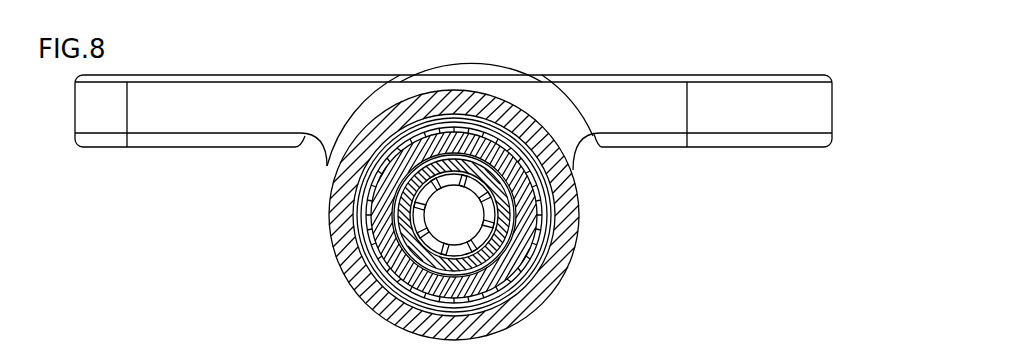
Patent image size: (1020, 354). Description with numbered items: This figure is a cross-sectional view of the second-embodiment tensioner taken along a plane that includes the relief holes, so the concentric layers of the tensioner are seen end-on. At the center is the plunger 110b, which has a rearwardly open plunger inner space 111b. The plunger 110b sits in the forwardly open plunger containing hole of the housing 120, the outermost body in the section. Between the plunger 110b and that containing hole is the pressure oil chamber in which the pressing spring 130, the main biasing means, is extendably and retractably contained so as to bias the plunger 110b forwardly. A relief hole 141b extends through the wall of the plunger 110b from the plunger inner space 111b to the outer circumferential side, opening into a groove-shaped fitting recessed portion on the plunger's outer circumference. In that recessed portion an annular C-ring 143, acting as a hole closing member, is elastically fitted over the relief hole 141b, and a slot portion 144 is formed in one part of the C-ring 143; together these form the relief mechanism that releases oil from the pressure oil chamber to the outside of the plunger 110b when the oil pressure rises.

The plunger 110b is at (378, 305).
The plunger inner space 111b is at (475, 223).
The housing 120 is at (560, 270).
The pressing spring 130 is at (485, 312).
The relief hole 141b is at (377, 213).
The C-ring 143 is at (367, 243).
The slot portion 144 is at (543, 213).